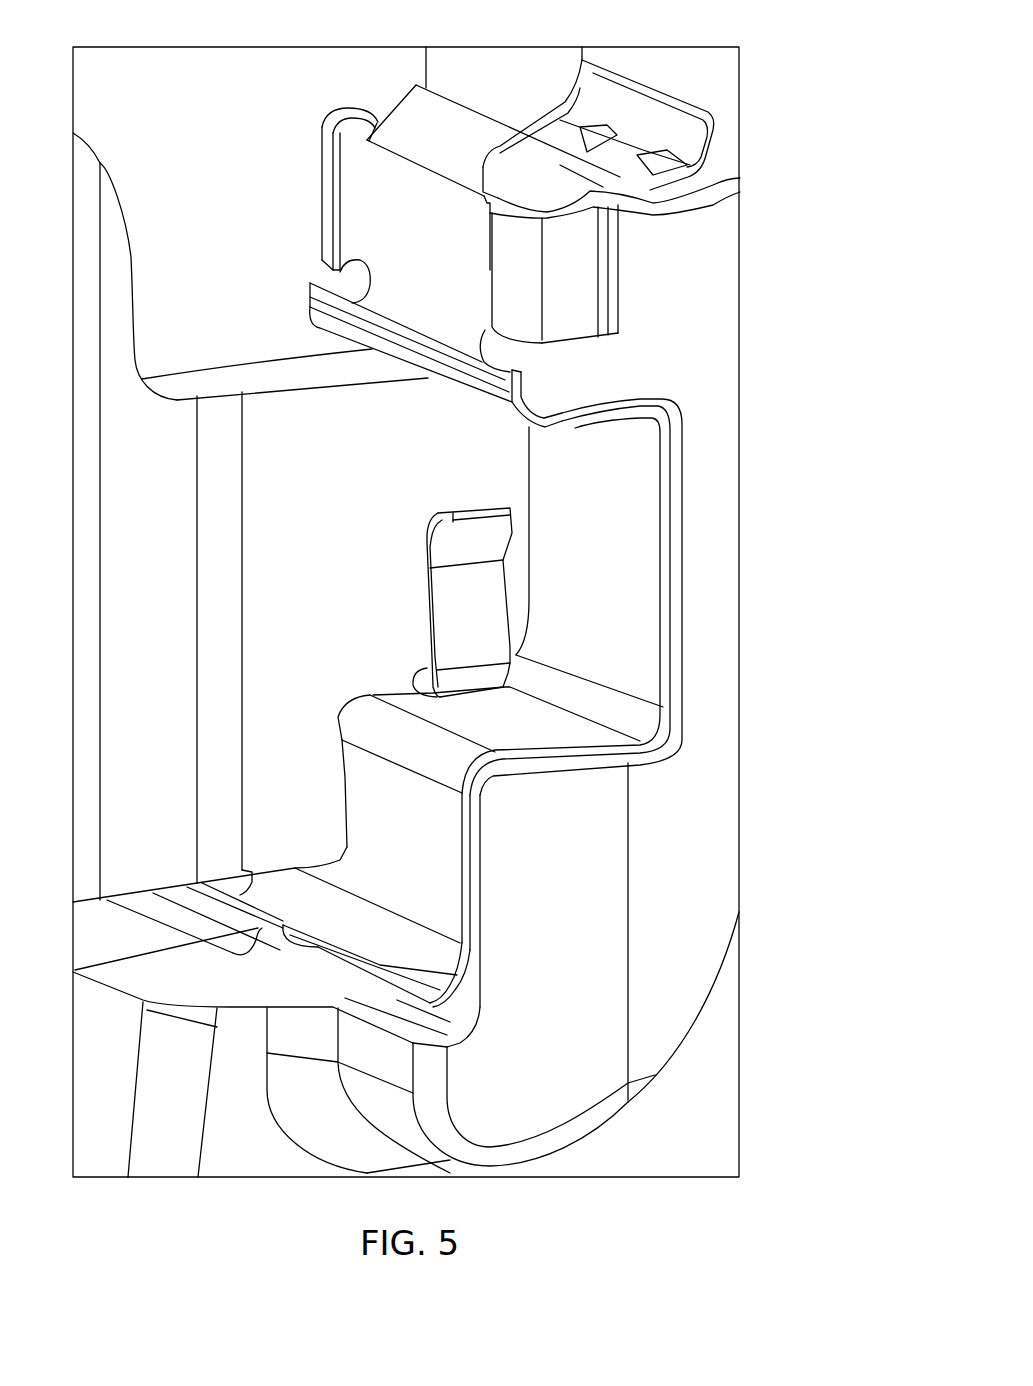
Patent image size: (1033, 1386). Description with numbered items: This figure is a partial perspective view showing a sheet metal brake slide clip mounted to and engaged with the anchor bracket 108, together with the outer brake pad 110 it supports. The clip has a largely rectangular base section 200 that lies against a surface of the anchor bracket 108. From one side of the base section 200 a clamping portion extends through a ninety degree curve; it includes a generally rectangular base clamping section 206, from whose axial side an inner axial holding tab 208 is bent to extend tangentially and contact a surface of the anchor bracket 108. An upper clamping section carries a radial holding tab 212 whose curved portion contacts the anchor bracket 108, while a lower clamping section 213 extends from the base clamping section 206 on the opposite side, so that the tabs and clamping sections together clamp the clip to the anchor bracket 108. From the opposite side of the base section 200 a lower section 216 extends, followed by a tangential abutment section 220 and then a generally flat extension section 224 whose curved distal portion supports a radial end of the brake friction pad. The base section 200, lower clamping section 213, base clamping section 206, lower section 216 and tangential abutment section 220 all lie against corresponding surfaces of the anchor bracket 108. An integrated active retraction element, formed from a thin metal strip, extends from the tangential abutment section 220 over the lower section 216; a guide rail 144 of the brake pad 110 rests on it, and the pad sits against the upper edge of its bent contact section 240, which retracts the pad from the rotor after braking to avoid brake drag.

The anchor bracket 108 is at (718, 347).
The outer brake pad 110 is at (115, 175).
The guide rails 144 is at (325, 432).
The base section 200 is at (645, 582).
The base clamping section 206 is at (373, 230).
The inner axial holding tab 208 is at (567, 297).
The radial holding tab 212 is at (653, 110).
The lower clamping section 213 is at (593, 408).
The lower section 216 is at (502, 722).
The tangential abutment section 220 is at (423, 877).
The extension section 224 is at (445, 1003).
The contact section 240 is at (495, 598).